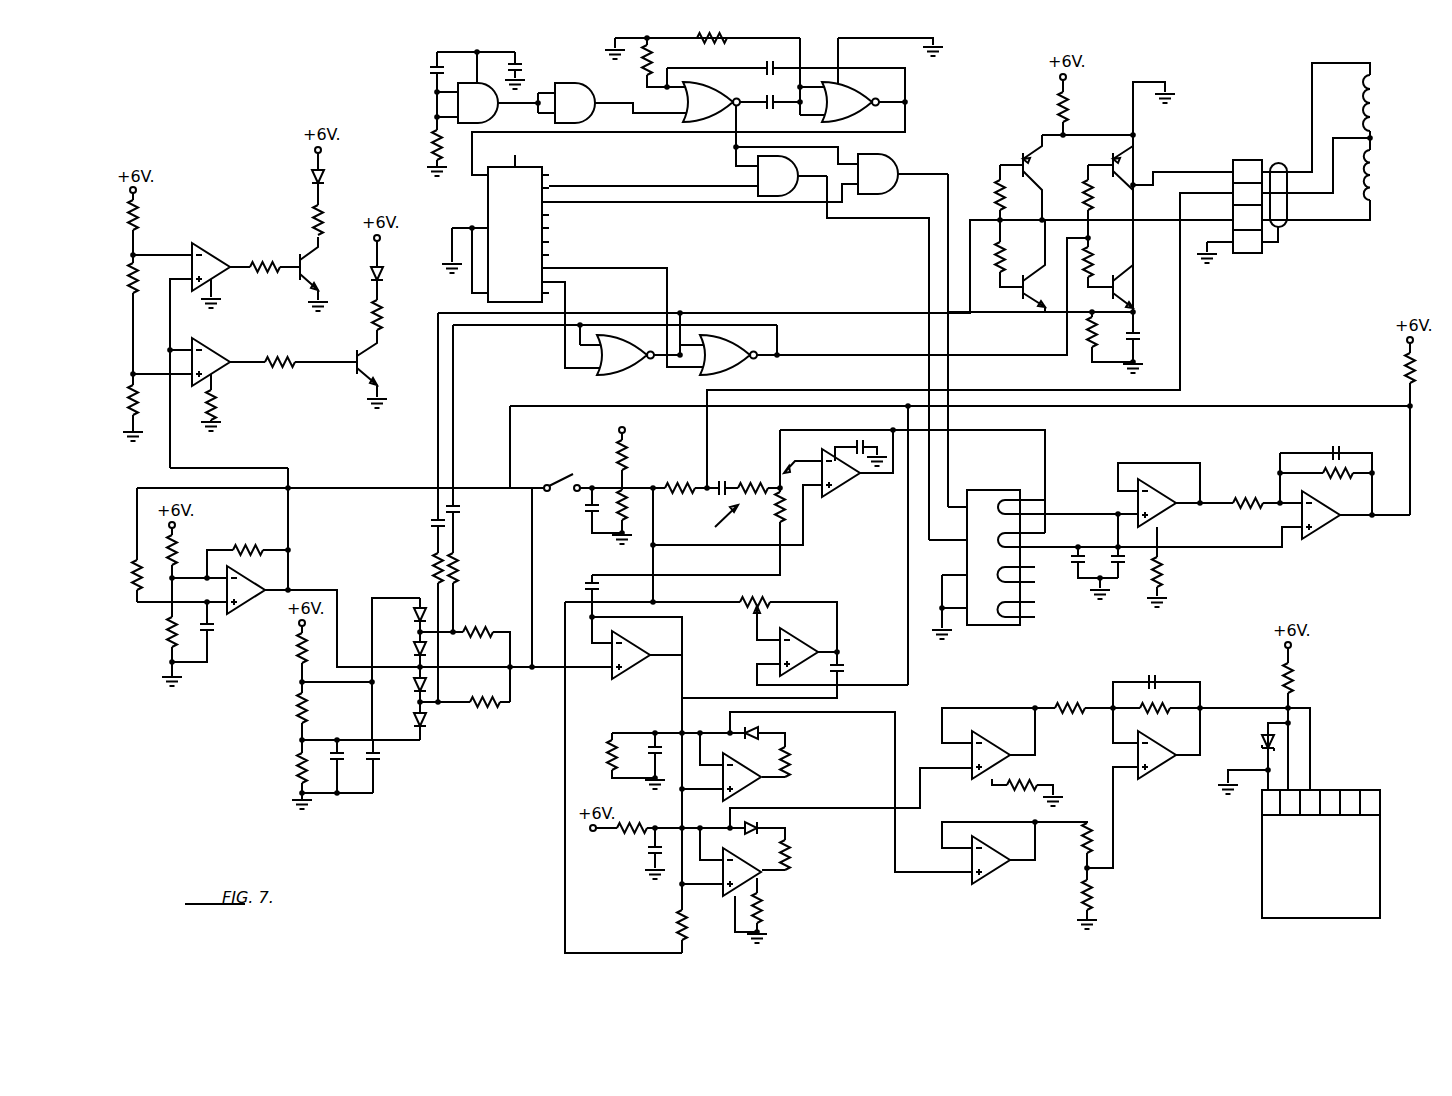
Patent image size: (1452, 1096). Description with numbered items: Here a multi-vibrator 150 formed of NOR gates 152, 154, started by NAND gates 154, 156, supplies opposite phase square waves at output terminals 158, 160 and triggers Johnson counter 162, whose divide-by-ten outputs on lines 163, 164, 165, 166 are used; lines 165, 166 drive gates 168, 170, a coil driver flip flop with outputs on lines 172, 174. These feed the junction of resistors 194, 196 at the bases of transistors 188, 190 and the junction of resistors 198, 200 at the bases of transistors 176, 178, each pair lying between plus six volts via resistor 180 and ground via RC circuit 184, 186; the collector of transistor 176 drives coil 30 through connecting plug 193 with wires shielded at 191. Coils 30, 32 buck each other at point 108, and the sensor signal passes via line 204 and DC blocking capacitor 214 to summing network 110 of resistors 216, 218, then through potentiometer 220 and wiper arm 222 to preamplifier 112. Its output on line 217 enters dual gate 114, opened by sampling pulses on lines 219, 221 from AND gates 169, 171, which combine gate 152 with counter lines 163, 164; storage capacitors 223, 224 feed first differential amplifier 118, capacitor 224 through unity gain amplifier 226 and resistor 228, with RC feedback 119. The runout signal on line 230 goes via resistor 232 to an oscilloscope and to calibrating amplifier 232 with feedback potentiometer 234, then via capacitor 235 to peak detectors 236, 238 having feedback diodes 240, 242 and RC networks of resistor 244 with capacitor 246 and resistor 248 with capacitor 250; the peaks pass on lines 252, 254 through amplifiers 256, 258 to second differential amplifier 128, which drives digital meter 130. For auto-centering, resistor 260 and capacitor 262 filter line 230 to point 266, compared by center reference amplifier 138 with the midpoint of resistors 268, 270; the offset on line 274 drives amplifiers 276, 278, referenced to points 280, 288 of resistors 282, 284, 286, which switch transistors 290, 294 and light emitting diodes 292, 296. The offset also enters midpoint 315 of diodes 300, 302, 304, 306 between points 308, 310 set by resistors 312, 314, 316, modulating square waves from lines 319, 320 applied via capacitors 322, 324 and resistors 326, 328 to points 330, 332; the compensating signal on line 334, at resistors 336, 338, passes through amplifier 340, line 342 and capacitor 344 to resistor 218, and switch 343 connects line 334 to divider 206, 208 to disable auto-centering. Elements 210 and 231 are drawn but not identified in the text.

The motor winding 30 is at (1380, 93).
The motor winding 32 is at (1380, 178).
The winding center tap 108 is at (1375, 139).
The filter circuit 110 is at (713, 522).
The operational amplifier 112 is at (842, 493).
The integrated circuit 114 is at (990, 627).
The operational amplifier 118 is at (1326, 532).
The feedback capacitor 119 is at (1310, 452).
The operational amplifier 128 is at (1152, 772).
The display module 130 is at (1382, 853).
The operational amplifier 138 is at (368, 616).
The oscillator 150 is at (716, 122).
The NOR gate 152 is at (686, 104).
The AND gate 154 is at (490, 118).
The AND gate 156 is at (590, 118).
The capacitor 158 is at (745, 106).
The NOR gate 160 is at (858, 97).
The counter integrated circuit 162 is at (488, 202).
The output line 163 is at (590, 188).
The output line 164 is at (597, 204).
The output line 165 is at (592, 268).
The output line 166 is at (567, 292).
The NOR gate 168 is at (618, 376).
The AND gate 169 is at (794, 175).
The NOR gate 170 is at (748, 368).
The AND gate 171 is at (888, 162).
The drive line 172 is at (791, 313).
The drive line 174 is at (838, 356).
The transistor 176 is at (1110, 156).
The transistor 178 is at (1110, 297).
The resistor 180 is at (1069, 104).
The resistor 184 is at (1087, 348).
The capacitor 186 is at (1140, 339).
The transistor 188 is at (1020, 153).
The transistor 190 is at (1017, 300).
The connector plug 191 is at (1289, 213).
The connector 193 is at (1248, 160).
The resistor 194 is at (1004, 196).
The resistor 196 is at (1004, 256).
The resistor 198 is at (1084, 195).
The resistor 200 is at (1092, 265).
The signal line 204 is at (1182, 312).
The resistor 206 is at (616, 462).
The capacitor 208 is at (592, 520).
The resistor 210 is at (683, 484).
The capacitor 214 is at (720, 495).
The potentiometer resistor 216 is at (754, 482).
The signal line 217 is at (1047, 444).
The potentiometer resistor 218 is at (778, 520).
The signal line 219 is at (888, 218).
The potentiometer 220 is at (772, 460).
The signal line 221 is at (947, 178).
The potentiometer wiper 222 is at (803, 458).
The capacitor 223 is at (1073, 570).
The capacitor 224 is at (1124, 566).
The operational amplifier 226 is at (1148, 491).
The resistor 228 is at (1252, 500).
The reference voltage line 230 is at (360, 488).
The output line 231 is at (1412, 472).
The operational amplifier / resistor 232 is at (785, 640).
The potentiometer 234 is at (752, 610).
The capacitor 235 is at (845, 668).
The comparator 236 is at (750, 790).
The comparator 238 is at (765, 890).
The diode 240 is at (760, 752).
The diode 242 is at (760, 846).
The resistor 244 is at (611, 752).
The capacitor 246 is at (649, 733).
The resistor 248 is at (625, 835).
The capacitor 250 is at (648, 860).
The signal line 252 is at (893, 745).
The signal line 254 is at (845, 803).
The operational amplifier 256 is at (988, 877).
The operational amplifier 258 is at (977, 740).
The resistor 260 is at (137, 568).
The capacitor 262 is at (215, 632).
The input line 266 is at (218, 607).
The resistor 268 is at (178, 550).
The resistor 270 is at (168, 633).
The signal line 274 is at (245, 468).
The operational amplifier 276 is at (207, 348).
The operational amplifier 278 is at (205, 255).
The input line 280 is at (133, 374).
The resistor 282 is at (115, 400).
The resistor 284 is at (115, 278).
The resistor 286 is at (137, 212).
The input line 288 is at (133, 255).
The transistor 290 is at (355, 352).
The light emitting diode 292 is at (384, 274).
The transistor 294 is at (298, 255).
The light emitting diode 296 is at (326, 178).
The diode 300 is at (412, 616).
The diode 302 is at (412, 652).
The diode 304 is at (412, 697).
The diode 306 is at (412, 720).
The diode string 308 is at (410, 598).
The diode string terminal 310 is at (402, 742).
The resistor 312 is at (296, 655).
The resistor 314 is at (297, 713).
The node 315 is at (418, 669).
The resistor 316 is at (297, 768).
The signal line 319 is at (436, 450).
The signal line 320 is at (456, 450).
The capacitor 322 is at (432, 527).
The capacitor 324 is at (459, 512).
The resistor 326 is at (433, 566).
The resistor 328 is at (460, 570).
The node 330 is at (425, 705).
The node 332 is at (412, 633).
The input line 334 is at (585, 672).
The resistor 336 is at (475, 631).
The resistor 338 is at (490, 706).
The operational amplifier 340 is at (630, 672).
The feedback line 342 is at (684, 643).
The switch 343 is at (562, 480).
The capacitor 344 is at (585, 587).